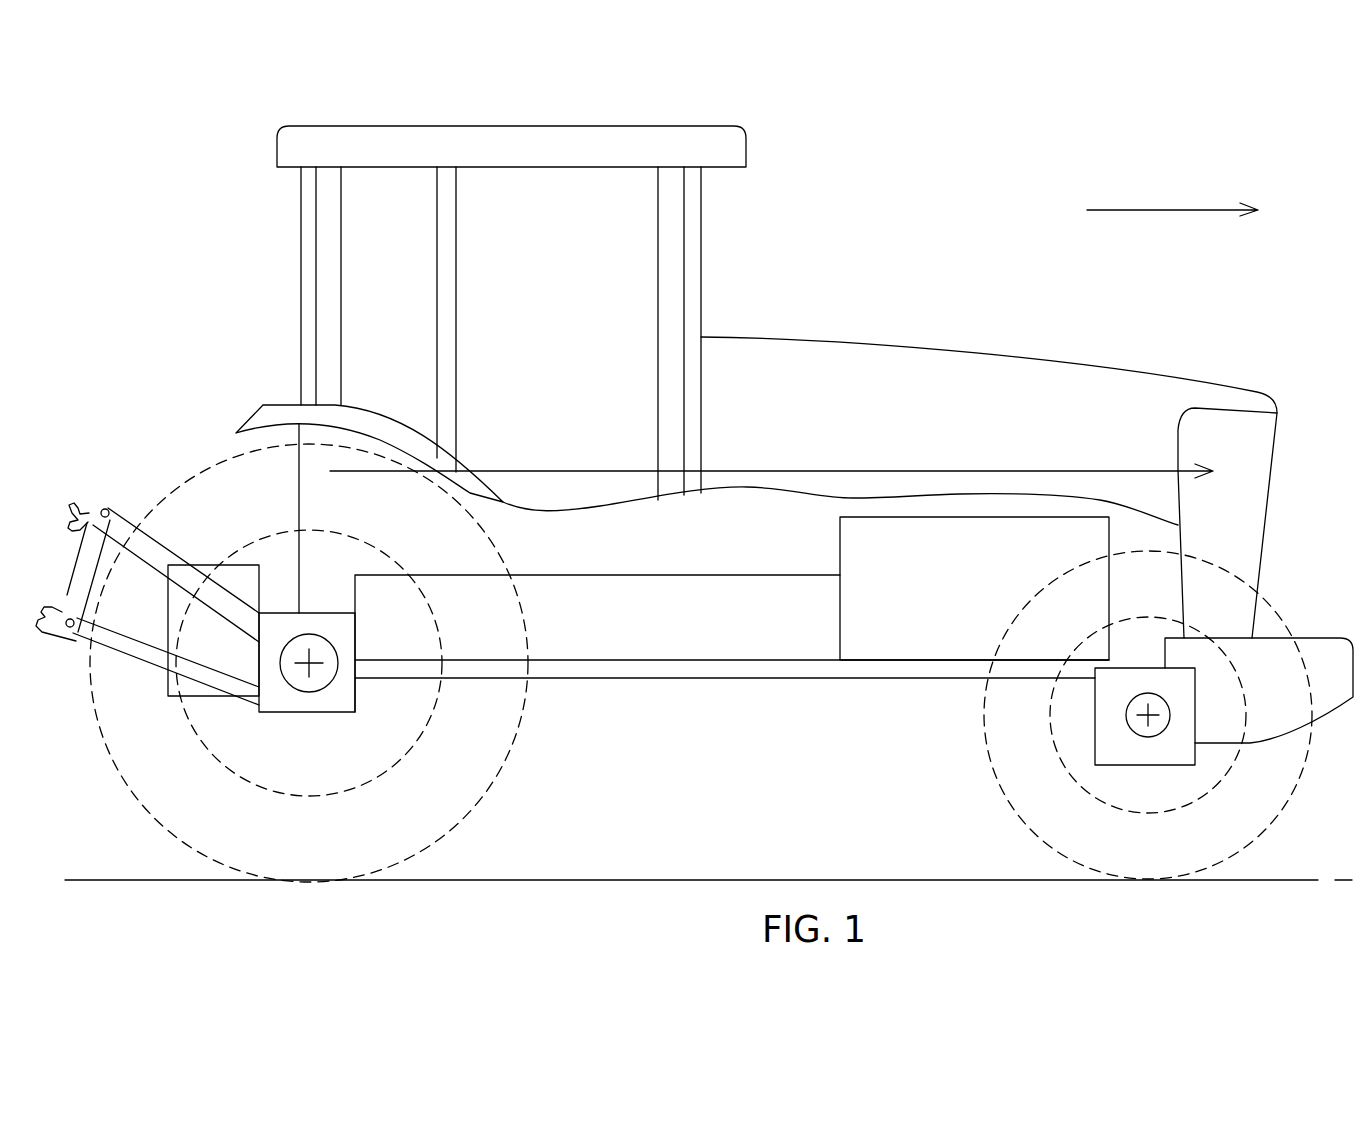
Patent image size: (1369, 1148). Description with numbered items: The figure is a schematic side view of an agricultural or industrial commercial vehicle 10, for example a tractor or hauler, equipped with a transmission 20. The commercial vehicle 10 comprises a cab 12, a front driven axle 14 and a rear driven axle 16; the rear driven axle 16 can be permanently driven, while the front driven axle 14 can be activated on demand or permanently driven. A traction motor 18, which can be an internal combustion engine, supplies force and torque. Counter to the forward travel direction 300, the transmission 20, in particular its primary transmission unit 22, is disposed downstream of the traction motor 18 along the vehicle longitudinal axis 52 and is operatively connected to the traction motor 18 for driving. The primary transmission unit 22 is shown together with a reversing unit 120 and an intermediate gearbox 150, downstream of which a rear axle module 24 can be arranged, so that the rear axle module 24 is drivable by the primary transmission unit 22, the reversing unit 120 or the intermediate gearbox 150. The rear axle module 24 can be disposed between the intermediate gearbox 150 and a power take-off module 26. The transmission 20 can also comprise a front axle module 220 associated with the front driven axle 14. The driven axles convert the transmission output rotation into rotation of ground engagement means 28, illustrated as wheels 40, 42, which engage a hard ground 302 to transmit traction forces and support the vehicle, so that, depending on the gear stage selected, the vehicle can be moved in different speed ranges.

The commercial vehicle 10 is at (1037, 113).
The cab 12 is at (605, 152).
The front driven axle 14 is at (1148, 715).
The rear driven axle 16 is at (308, 663).
The traction motor 18 is at (988, 603).
The transmission 20 is at (740, 430).
The primary transmission unit 22 is at (732, 643).
The reversing unit 120 is at (732, 643).
The intermediate gearbox 150 is at (713, 632).
The rear axle module 24 is at (321, 613).
The power take-off module 26 is at (228, 651).
The ground engagement means 28 is at (701, 663).
The wheels 40 is at (428, 802).
The wheels 42 is at (1042, 797).
The vehicle longitudinal axis 52 is at (870, 470).
The front axle module 220 is at (1113, 733).
The forward travel direction 300 is at (1160, 210).
The hard ground 302 is at (445, 882).